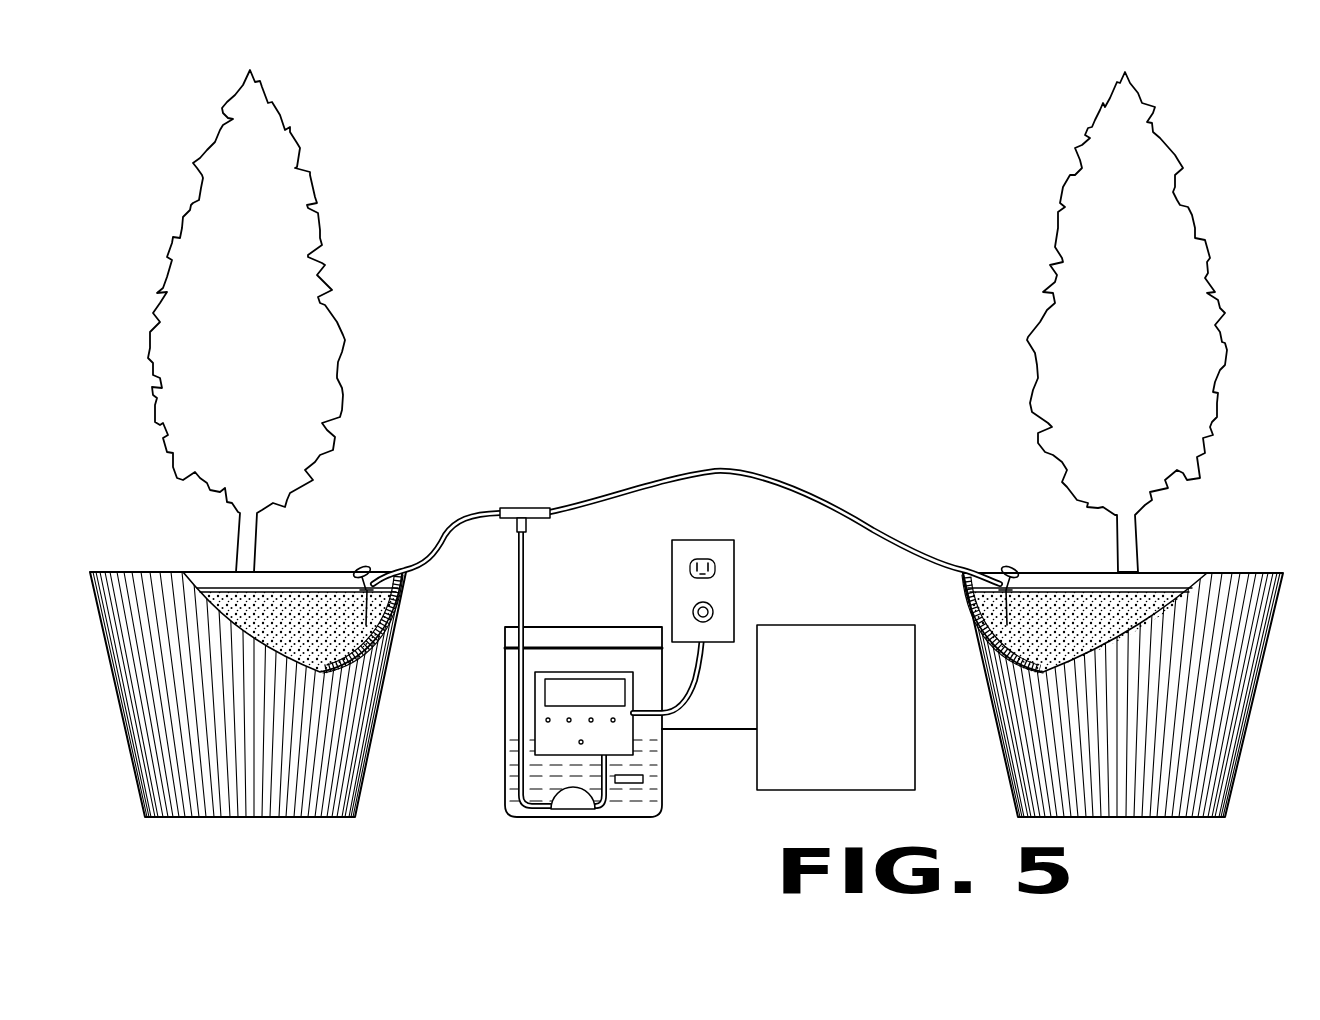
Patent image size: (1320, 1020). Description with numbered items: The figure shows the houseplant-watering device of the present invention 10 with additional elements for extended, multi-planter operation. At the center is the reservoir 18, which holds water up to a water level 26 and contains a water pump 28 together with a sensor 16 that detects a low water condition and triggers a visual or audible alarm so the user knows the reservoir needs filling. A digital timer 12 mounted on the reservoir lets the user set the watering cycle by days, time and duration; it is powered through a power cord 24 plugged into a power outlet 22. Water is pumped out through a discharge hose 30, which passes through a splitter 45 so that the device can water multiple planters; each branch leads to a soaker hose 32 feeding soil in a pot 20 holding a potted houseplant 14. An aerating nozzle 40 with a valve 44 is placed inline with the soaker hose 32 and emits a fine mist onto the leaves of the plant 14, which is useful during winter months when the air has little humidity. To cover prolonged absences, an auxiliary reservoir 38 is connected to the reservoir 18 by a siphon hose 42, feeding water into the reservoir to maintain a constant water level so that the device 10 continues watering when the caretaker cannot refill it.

The houseplant-watering device 10 is at (604, 431).
The digital timer 12 is at (588, 671).
The potted houseplant 14 is at (308, 257).
The sensor 16 is at (644, 779).
The reservoir 18 is at (503, 848).
The pot 20 is at (112, 661).
The power outlet 22 is at (705, 540).
The power cord 24 is at (609, 798).
The water level 26 is at (511, 741).
The water pump 28 is at (562, 809).
The discharge hose 30 is at (746, 471).
The soaker hose 32 is at (205, 590).
The auxiliary reservoir 38 is at (837, 625).
The aerating nozzle 40 is at (371, 574).
The siphon hose 42 is at (696, 733).
The valve 44 is at (388, 626).
The splitter 45 is at (521, 508).